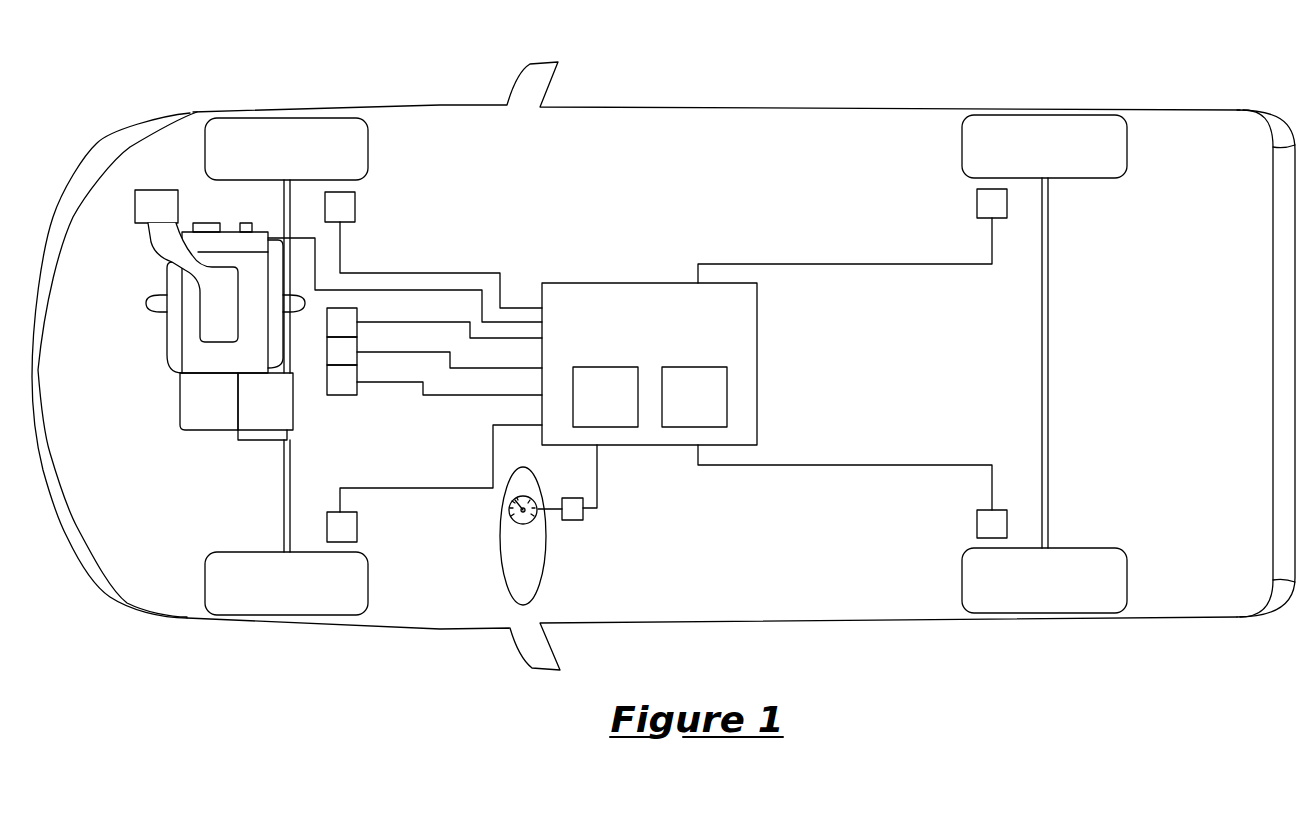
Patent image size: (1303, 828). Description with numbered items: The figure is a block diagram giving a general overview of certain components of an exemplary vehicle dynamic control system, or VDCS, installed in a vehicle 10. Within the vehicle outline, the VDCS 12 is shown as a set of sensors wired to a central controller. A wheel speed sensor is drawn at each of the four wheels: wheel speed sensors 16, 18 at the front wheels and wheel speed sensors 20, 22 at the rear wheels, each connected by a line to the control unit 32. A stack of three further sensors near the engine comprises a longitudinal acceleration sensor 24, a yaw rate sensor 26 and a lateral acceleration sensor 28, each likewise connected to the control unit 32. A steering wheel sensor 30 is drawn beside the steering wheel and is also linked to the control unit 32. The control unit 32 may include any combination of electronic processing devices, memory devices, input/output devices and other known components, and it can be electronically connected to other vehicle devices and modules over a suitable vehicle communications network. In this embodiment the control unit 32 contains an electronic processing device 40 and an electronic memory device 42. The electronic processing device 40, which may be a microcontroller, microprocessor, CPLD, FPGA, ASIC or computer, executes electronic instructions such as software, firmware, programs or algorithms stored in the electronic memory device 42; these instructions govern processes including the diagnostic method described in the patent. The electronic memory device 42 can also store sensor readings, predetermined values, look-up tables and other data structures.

The vehicle 10 is at (995, 50).
The vehicle dynamic control system 12 is at (655, 200).
The wheel speed sensor 16 is at (357, 523).
The wheel speed sensor 18 is at (356, 207).
The wheel speed sensor 20 is at (977, 525).
The wheel speed sensor 22 is at (977, 203).
The longitudinal acceleration sensor 24 is at (347, 387).
The yaw rate sensor 26 is at (347, 352).
The lateral acceleration sensor 28 is at (347, 322).
The steering wheel sensor 30 is at (568, 521).
The control unit 32 is at (649, 399).
The electronic processing device 40 is at (591, 409).
The electronic memory device 42 is at (681, 409).